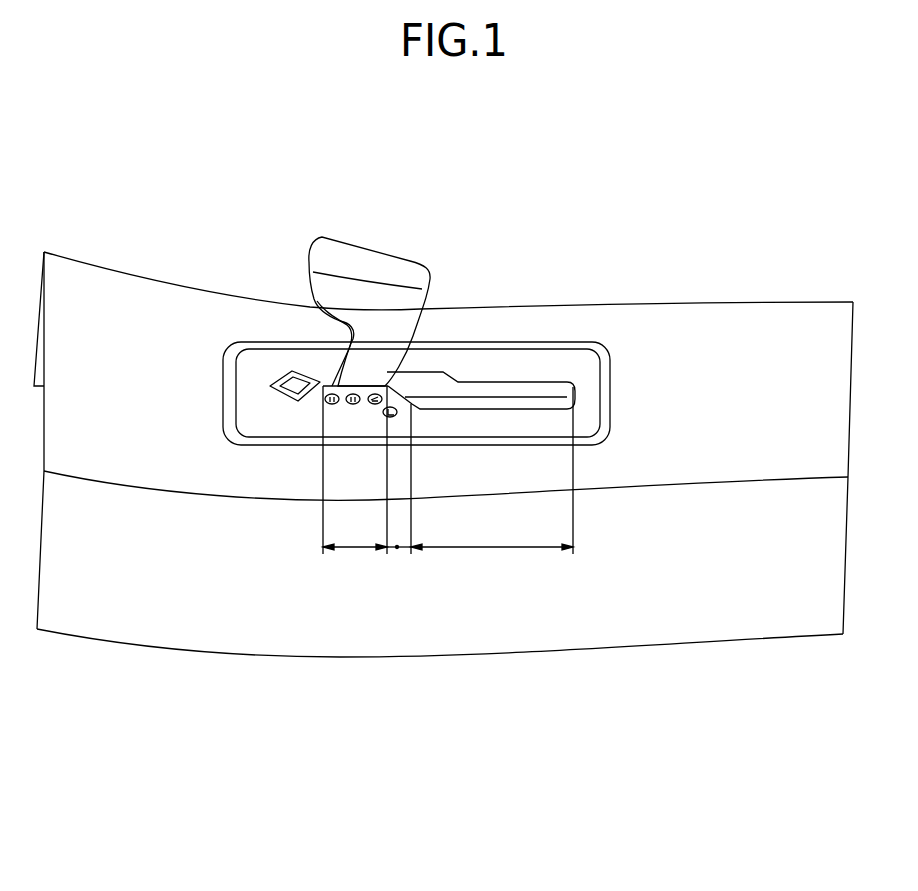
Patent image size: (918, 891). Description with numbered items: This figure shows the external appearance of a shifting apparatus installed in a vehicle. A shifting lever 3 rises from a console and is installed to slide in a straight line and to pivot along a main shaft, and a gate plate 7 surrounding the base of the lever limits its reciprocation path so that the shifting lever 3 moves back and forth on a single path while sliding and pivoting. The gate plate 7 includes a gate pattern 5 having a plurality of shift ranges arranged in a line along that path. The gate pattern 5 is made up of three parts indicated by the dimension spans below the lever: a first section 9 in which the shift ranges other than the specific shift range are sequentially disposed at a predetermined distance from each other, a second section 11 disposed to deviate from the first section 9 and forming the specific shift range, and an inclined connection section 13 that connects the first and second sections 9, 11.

The shifting lever 3 is at (355, 258).
The gate plate 7 is at (532, 364).
The gate pattern 5 is at (448, 624).
The first section 9 is at (355, 548).
The connection section 13 is at (400, 548).
The second section 11 is at (493, 548).